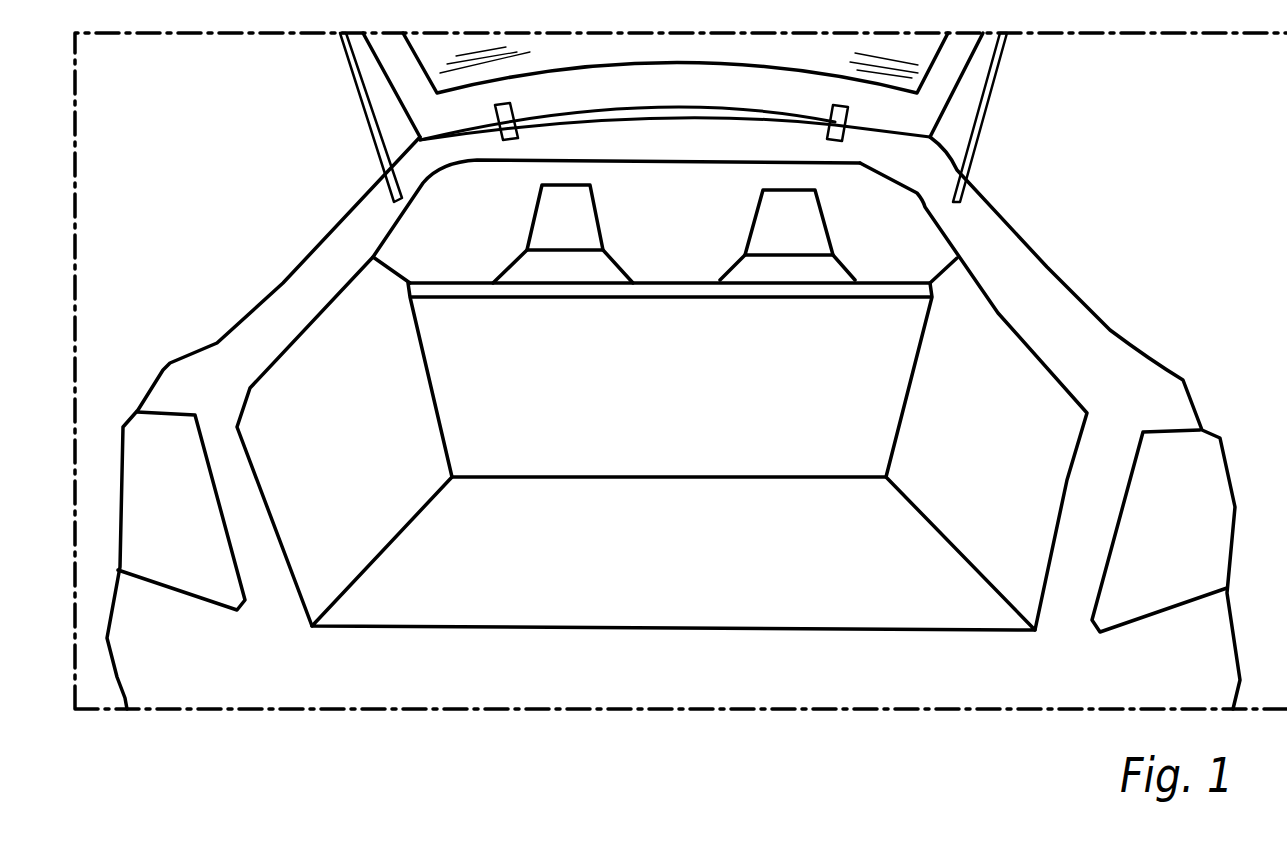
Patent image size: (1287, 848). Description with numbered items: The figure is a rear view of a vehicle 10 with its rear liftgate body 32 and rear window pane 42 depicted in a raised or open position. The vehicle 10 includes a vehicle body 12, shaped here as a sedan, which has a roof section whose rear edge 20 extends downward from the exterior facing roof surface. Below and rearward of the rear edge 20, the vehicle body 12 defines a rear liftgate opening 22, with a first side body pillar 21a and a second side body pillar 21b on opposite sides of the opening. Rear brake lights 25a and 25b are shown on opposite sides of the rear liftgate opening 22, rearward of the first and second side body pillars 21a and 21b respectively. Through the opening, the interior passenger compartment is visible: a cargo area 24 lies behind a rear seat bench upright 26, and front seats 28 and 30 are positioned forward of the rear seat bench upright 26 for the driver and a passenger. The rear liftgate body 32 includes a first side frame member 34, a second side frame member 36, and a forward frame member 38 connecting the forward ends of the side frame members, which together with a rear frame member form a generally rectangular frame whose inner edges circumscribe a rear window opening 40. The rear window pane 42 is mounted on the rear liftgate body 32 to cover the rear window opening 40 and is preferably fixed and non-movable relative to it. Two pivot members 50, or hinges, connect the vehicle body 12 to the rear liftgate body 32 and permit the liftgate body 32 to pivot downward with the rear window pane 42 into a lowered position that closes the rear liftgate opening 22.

The vehicle 10 is at (1173, 137).
The vehicle body 12 is at (1087, 423).
The rear edge 20 is at (693, 140).
The first side body pillar 21a is at (307, 288).
The second side body pillar 21b is at (1100, 350).
The rear liftgate opening 22 is at (1010, 329).
The cargo area 24 is at (660, 570).
The rear brake light 25a is at (140, 472).
The rear brake light 25b is at (1210, 475).
The rear seat bench upright 26 is at (685, 398).
The front seat 28 is at (548, 228).
The front seat 30 is at (813, 235).
The rear liftgate body 32 is at (640, 117).
The first side frame member 34 is at (898, 52).
The second side frame member 36 is at (403, 83).
The forward frame member 38 is at (777, 83).
The rear window opening 40 is at (412, 56).
The rear window pane 42 is at (957, 53).
The pivot member 50 is at (495, 112).